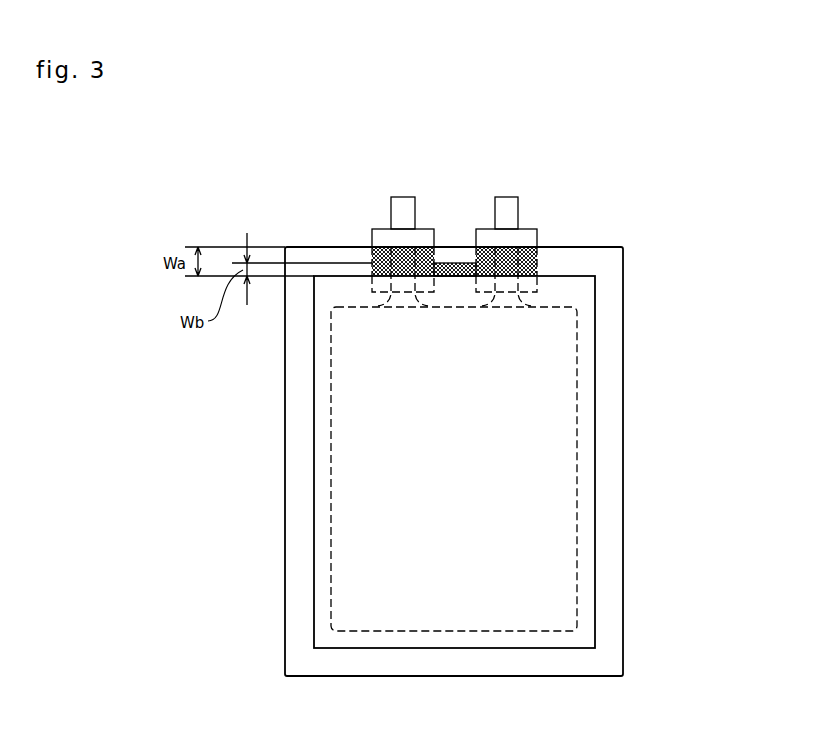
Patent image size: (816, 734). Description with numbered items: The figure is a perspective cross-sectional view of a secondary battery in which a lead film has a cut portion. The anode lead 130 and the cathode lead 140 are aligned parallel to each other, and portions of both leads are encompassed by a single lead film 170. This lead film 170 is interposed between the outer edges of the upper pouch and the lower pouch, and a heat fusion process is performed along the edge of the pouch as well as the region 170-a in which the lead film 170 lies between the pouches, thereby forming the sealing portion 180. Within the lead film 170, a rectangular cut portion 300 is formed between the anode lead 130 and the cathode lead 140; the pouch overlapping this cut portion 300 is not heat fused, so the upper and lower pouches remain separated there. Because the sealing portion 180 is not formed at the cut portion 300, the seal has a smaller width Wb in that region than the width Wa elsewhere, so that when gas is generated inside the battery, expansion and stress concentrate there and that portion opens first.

The anode lead 130 is at (402, 206).
The cathode lead 140 is at (508, 206).
The cut portion 300 is at (453, 263).
The lead film 170 is at (587, 299).
The region of the pouch in which the lead film is interposed 170-a is at (476, 200).
The sealing portion 180 is at (610, 429).